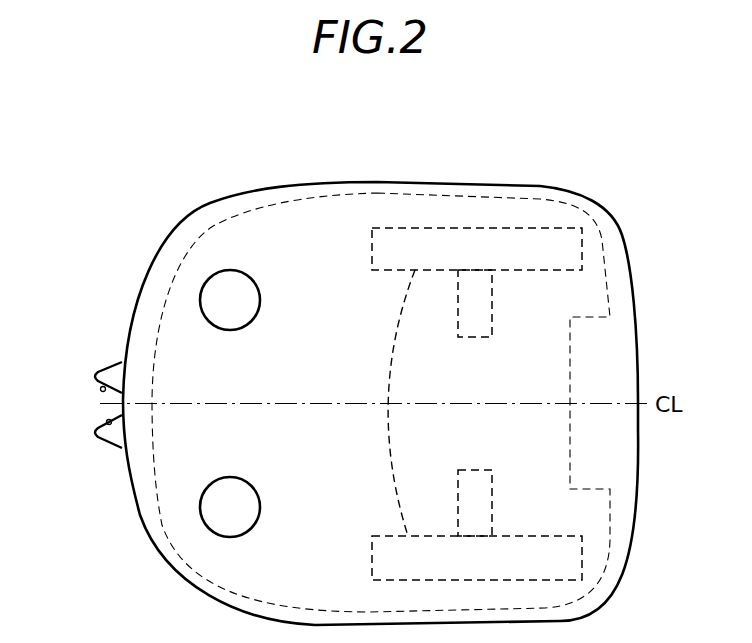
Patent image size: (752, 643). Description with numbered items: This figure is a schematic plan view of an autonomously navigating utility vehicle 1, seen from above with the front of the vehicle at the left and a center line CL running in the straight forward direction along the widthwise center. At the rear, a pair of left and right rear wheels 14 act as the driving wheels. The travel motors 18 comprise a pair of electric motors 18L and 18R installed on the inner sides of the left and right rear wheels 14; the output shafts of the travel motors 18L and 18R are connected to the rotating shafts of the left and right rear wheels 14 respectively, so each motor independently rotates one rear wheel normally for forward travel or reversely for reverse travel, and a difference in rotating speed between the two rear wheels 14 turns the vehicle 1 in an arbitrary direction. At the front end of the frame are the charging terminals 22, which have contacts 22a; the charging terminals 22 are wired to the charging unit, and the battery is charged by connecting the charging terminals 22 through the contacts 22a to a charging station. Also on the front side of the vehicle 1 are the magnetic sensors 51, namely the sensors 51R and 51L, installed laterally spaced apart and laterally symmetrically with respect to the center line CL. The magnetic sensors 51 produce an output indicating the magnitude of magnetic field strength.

The utility vehicle 1 is at (581, 181).
The rear wheels 14 is at (394, 403).
The travel motors 18 is at (513, 403).
The right travel motor 18R is at (472, 337).
The left travel motor 18L is at (477, 470).
The charging terminals 22 is at (96, 375).
The contacts 22a is at (107, 420).
The magnetic sensors 51 is at (217, 403).
The right magnetic sensor 51R is at (230, 330).
The left magnetic sensor 51L is at (230, 477).